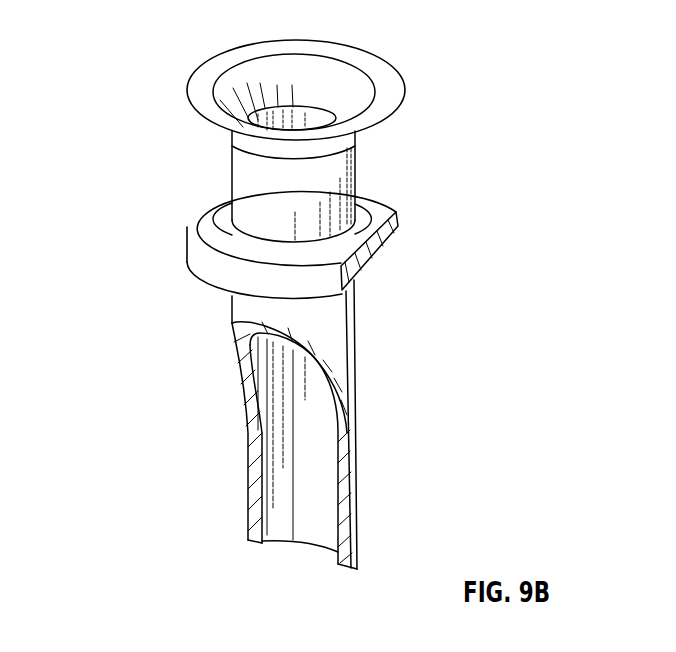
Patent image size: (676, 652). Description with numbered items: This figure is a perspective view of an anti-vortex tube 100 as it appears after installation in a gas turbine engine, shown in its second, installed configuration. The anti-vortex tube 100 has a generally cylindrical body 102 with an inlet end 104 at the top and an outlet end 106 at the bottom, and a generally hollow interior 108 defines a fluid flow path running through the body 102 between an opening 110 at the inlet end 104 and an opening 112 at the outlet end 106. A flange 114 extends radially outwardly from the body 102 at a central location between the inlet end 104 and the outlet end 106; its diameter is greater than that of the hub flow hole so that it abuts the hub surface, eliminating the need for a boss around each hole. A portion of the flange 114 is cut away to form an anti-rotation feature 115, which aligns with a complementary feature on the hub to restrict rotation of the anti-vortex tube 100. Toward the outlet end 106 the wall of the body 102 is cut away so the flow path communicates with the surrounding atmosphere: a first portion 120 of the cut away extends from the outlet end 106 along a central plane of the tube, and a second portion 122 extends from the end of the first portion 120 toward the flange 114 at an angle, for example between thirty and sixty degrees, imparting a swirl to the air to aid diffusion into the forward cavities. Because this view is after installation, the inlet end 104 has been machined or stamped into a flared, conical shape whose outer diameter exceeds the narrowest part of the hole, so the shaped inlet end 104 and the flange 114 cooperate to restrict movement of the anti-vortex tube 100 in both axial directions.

The anti-vortex tube 100 is at (111, 48).
The body 102 is at (342, 323).
The inlet end 104 is at (385, 89).
The outlet end 106 is at (261, 540).
The hollow interior 108 is at (275, 468).
The opening at the inlet end 110 is at (292, 106).
The opening at the outlet end 112 is at (308, 525).
The flange 114 is at (198, 223).
The anti-rotation feature 115 is at (400, 226).
The first portion of the cut away 120 is at (370, 390).
The second portion of the cut away 122 is at (222, 322).